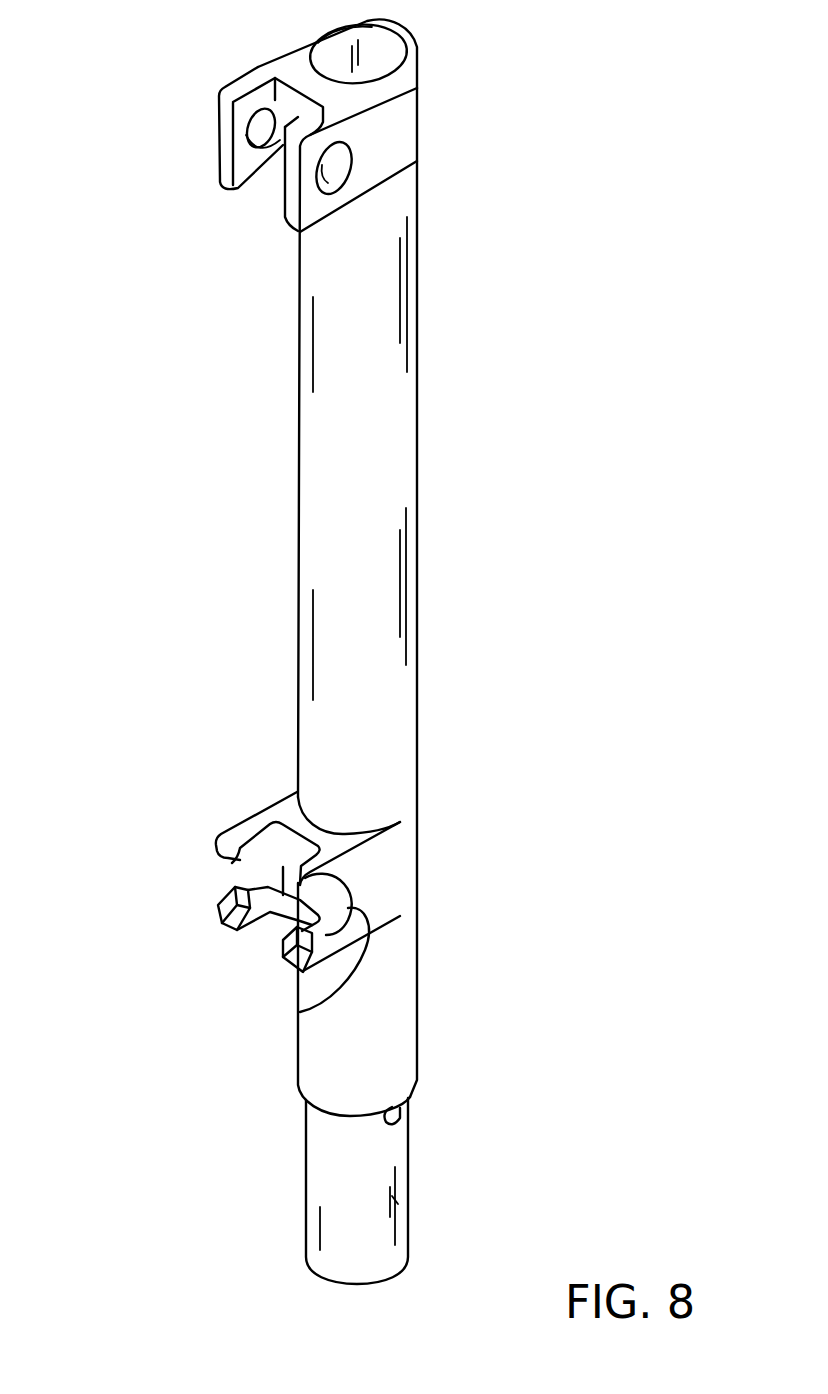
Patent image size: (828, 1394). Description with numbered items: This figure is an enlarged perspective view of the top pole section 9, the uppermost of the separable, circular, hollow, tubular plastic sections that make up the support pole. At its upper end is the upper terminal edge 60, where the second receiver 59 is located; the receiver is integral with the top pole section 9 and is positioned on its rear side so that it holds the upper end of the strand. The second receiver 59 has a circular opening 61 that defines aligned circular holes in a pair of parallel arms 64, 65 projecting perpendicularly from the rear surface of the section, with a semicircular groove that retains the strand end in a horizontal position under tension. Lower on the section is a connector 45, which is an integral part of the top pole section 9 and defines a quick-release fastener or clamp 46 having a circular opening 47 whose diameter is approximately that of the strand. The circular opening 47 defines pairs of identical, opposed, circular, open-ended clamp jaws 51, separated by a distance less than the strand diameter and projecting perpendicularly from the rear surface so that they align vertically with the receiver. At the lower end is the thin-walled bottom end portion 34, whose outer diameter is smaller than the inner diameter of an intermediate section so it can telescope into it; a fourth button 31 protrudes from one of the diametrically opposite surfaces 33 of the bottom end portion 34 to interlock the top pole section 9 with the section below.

The top pole section 9 is at (566, 561).
The upper terminal edge 60 is at (413, 43).
The second receiver 59 is at (208, 144).
The arm 64 is at (247, 105).
The circular opening 61 is at (280, 163).
The arm 65 is at (302, 223).
The quick-release fastener or clamp 46 is at (382, 885).
The connector 45 is at (211, 826).
The clamp jaws 51 is at (242, 858).
The circular opening 47 is at (308, 1012).
The bottom end portion 34 is at (305, 1217).
The fourth button 31 is at (407, 1127).
The surface 33 is at (393, 1197).